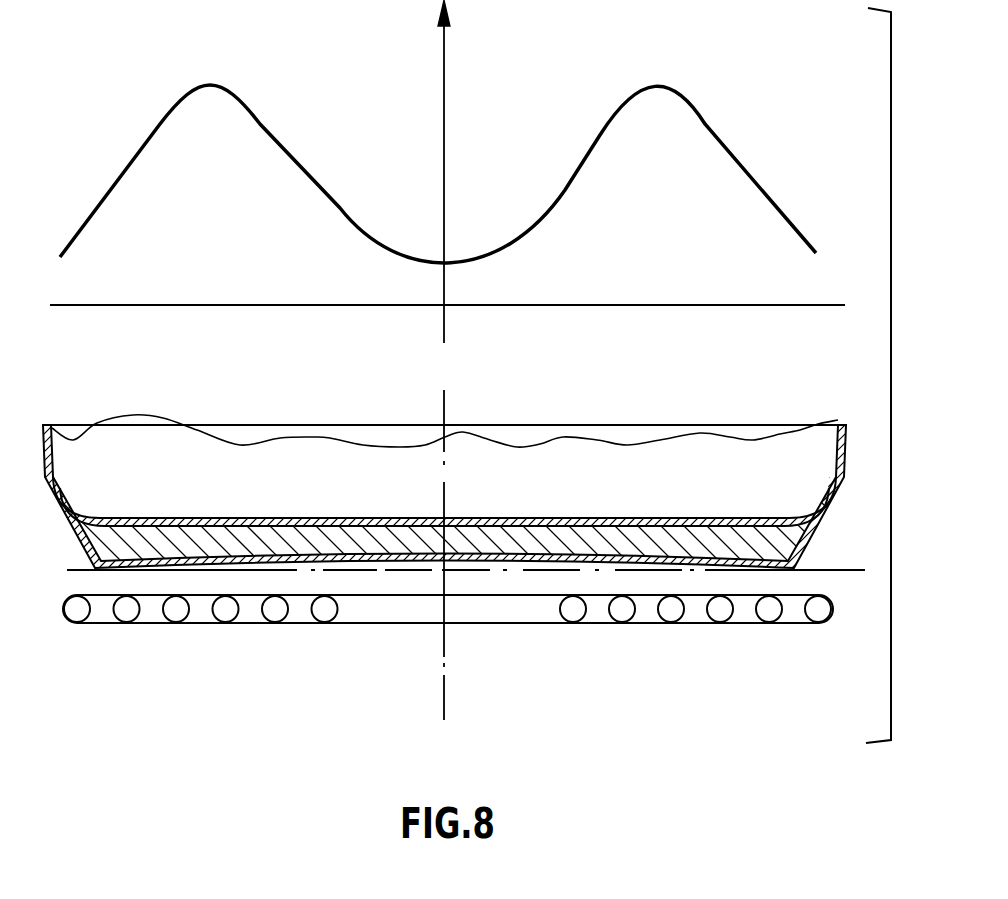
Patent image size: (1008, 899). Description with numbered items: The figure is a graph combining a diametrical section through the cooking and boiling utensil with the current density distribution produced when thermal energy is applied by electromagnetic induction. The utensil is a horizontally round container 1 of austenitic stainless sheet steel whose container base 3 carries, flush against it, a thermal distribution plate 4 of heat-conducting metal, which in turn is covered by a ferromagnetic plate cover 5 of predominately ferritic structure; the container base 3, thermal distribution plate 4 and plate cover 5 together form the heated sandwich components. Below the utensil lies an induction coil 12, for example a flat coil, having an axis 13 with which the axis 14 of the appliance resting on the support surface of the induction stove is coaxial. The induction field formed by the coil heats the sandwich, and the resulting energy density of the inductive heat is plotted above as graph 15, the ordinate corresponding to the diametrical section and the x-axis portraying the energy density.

The container 1 is at (504, 452).
The container base 3 is at (562, 520).
The thermal distribution plate 4 is at (628, 540).
The plate cover 5 is at (686, 548).
The induction coil 12 is at (545, 613).
The axis of the induction coil 13 is at (446, 697).
The axis of the cooking and/or boiling appliance 14 is at (472, 438).
The graph 15 is at (598, 123).